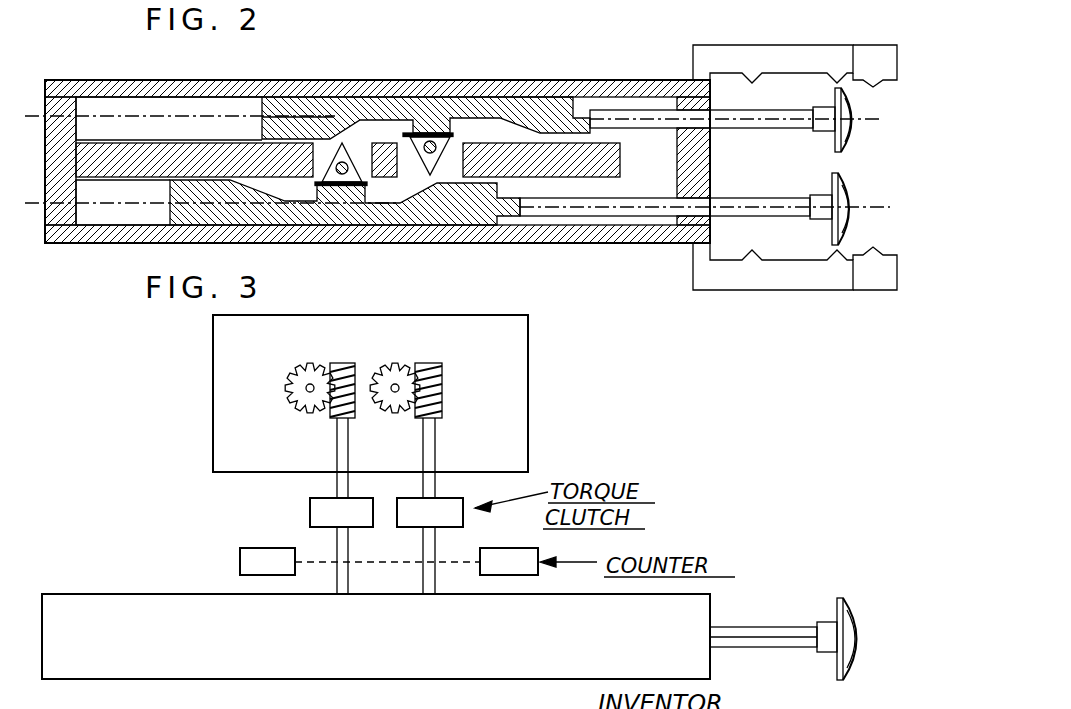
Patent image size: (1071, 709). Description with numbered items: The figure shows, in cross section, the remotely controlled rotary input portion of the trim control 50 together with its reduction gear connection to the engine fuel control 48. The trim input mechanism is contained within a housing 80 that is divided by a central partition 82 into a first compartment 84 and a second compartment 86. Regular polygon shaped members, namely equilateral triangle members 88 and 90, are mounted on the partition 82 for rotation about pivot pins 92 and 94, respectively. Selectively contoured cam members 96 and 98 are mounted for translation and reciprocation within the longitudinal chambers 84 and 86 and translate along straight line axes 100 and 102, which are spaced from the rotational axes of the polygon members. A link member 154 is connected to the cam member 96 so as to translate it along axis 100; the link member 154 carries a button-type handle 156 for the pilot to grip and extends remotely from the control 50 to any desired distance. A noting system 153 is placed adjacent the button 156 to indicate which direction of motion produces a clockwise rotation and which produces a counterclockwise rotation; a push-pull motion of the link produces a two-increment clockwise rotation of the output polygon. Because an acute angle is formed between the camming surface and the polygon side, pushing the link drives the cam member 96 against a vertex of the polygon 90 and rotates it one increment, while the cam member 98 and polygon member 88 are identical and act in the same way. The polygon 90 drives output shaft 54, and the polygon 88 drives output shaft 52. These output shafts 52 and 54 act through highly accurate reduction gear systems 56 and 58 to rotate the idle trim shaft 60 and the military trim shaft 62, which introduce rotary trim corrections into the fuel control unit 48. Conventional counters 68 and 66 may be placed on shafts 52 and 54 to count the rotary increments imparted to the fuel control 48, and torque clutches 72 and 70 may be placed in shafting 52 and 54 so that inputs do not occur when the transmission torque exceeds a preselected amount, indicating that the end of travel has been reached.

In FIG. 3, the engine fuel control 48 is at (515, 365).
In FIG. 2, the trim control 50 is at (375, 68).
In FIG. 3, the trim control 50 is at (133, 584).
In FIG. 3, the output shaft 52 is at (337, 451).
In FIG. 3, the output shaft 54 is at (435, 451).
In FIG. 3, the reduction gear system 56 is at (335, 356).
In FIG. 3, the reduction gear system 58 is at (425, 356).
In FIG. 3, the idle trim shaft 60 is at (312, 385).
In FIG. 3, the military trim shaft 62 is at (397, 385).
In FIG. 3, the counter 66 is at (500, 557).
In FIG. 3, the counter 68 is at (248, 558).
In FIG. 3, the torque clutch 70 is at (442, 523).
In FIG. 3, the torque clutch 72 is at (354, 523).
In FIG. 2, the housing 80 is at (462, 83).
In FIG. 2, the central partition 82 is at (133, 143).
In FIG. 2, the first compartment 84 is at (178, 107).
In FIG. 2, the second compartment 86 is at (117, 212).
In FIG. 2, the equilateral triangle member 88 is at (365, 185).
In FIG. 2, the equilateral triangle member 90 is at (432, 175).
In FIG. 2, the pivot pin 92 is at (342, 162).
In FIG. 2, the pivot pin 94 is at (432, 143).
In FIG. 2, the cam member 96 is at (285, 105).
In FIG. 2, the cam member 98 is at (330, 217).
In FIG. 2, the straight line axis 100 is at (103, 115).
In FIG. 2, the straight line axis 102 is at (37, 203).
In FIG. 2, the noting system 153 is at (798, 278).
In FIG. 2, the link member 154 is at (607, 115).
In FIG. 3, the link member 154 is at (760, 633).
In FIG. 2, the button-type handle 156 is at (848, 145).
In FIG. 3, the button-type handle 156 is at (848, 600).